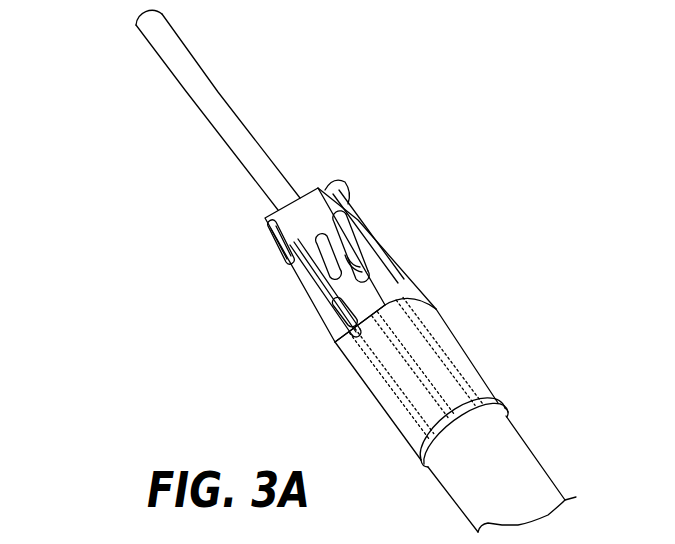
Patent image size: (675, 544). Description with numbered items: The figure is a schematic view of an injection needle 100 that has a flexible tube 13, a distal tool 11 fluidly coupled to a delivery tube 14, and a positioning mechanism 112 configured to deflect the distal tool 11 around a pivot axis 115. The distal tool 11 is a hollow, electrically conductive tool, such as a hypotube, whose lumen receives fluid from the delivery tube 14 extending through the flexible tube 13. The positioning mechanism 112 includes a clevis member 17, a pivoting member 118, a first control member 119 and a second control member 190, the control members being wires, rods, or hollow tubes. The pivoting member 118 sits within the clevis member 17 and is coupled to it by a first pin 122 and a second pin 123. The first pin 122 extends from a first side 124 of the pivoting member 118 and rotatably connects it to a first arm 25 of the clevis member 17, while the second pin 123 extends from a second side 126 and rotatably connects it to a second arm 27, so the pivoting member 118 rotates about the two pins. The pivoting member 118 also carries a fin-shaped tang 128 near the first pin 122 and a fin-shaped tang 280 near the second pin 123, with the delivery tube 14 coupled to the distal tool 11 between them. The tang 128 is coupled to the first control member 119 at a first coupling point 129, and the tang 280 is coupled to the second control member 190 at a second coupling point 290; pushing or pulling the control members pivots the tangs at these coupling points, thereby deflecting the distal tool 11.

The injection needle 100 is at (110, 158).
The distal tool 11 is at (215, 83).
The pivoting member 118 is at (304, 185).
The second pin 123 is at (337, 184).
The second side 126 is at (372, 211).
The tang 280 is at (389, 249).
The second arm 27 is at (392, 253).
The second coupling point 290 is at (391, 285).
The delivery tube 14 is at (410, 293).
The positioning mechanism 112 is at (496, 249).
The clevis member 17 is at (361, 386).
The second control member 190 is at (446, 350).
The first control member 119 is at (411, 420).
The flexible tube 13 is at (530, 450).
The first pin 122 is at (276, 253).
The first side 124 is at (244, 262).
The pivot axis 115 is at (273, 258).
The first arm 25 is at (301, 298).
The tang 128 is at (312, 303).
The first coupling point 129 is at (354, 337).